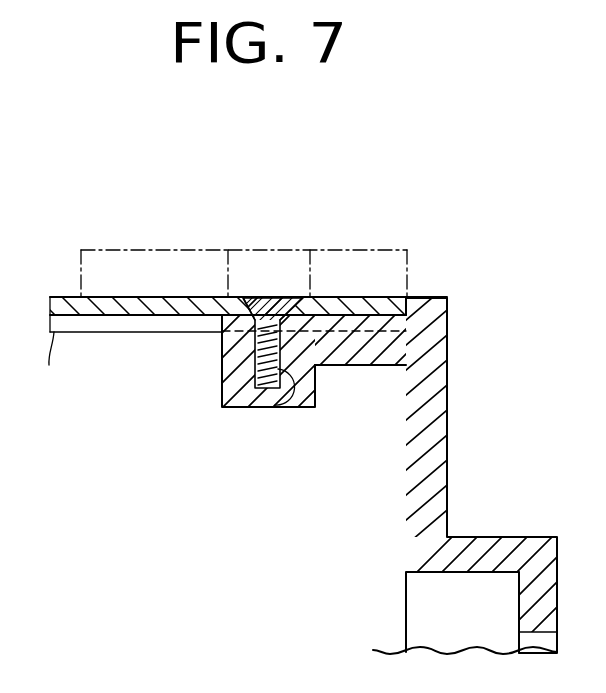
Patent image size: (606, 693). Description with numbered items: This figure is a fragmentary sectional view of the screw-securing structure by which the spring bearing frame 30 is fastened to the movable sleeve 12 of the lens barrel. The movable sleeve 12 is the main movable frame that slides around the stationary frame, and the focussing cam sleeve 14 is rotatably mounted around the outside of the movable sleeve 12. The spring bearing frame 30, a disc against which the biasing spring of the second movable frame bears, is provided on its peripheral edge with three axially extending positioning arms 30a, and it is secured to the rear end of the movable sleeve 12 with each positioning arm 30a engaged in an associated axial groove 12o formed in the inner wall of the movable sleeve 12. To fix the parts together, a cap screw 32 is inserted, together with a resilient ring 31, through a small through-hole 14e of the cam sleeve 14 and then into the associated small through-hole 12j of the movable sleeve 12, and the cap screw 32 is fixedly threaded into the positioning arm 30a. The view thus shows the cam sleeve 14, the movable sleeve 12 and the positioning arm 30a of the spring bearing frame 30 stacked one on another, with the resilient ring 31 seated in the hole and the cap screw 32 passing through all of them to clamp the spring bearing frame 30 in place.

The movable sleeve 12 is at (120, 334).
The axial groove 12o is at (82, 334).
The small through-hole 12j is at (216, 306).
The focussing cam sleeve 14 is at (178, 250).
The small through-hole 14e is at (284, 262).
The spring bearing frame 30 is at (437, 447).
The positioning arm 30a is at (355, 367).
The resilient ring 31 is at (222, 384).
The cap screw 32 is at (280, 405).